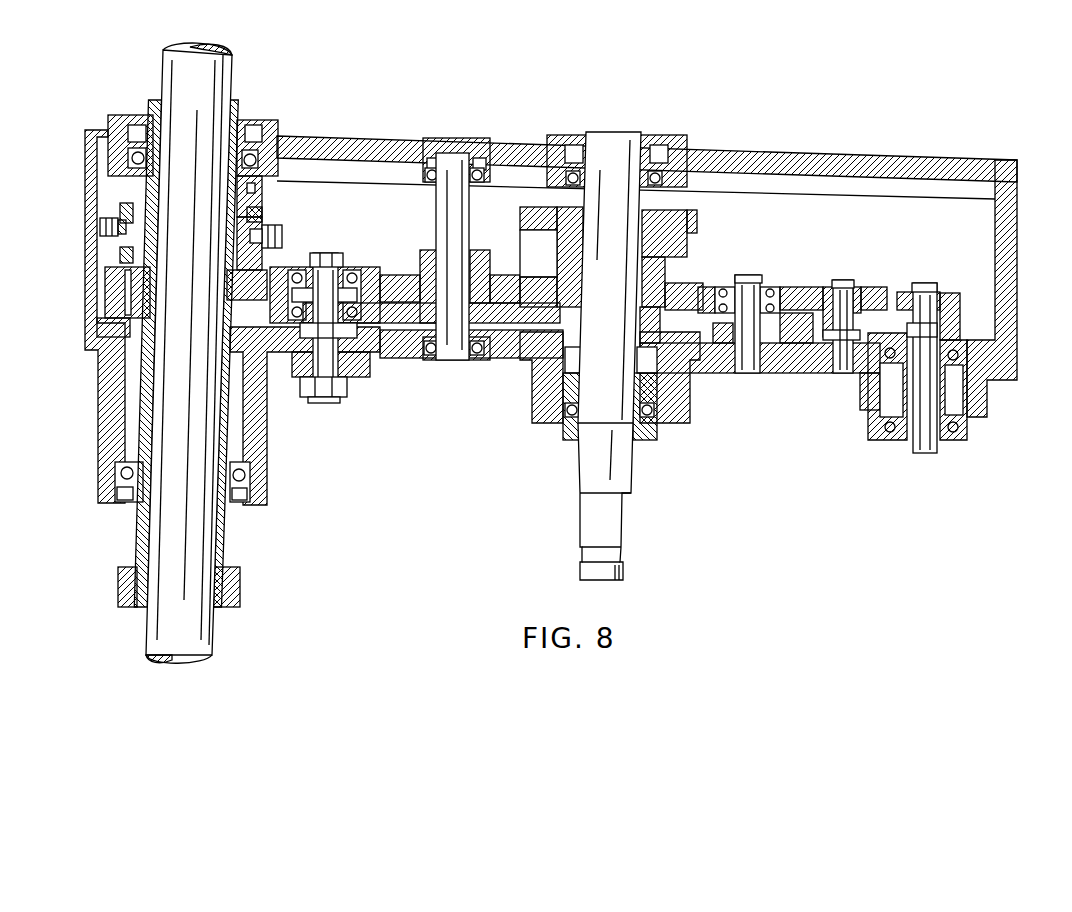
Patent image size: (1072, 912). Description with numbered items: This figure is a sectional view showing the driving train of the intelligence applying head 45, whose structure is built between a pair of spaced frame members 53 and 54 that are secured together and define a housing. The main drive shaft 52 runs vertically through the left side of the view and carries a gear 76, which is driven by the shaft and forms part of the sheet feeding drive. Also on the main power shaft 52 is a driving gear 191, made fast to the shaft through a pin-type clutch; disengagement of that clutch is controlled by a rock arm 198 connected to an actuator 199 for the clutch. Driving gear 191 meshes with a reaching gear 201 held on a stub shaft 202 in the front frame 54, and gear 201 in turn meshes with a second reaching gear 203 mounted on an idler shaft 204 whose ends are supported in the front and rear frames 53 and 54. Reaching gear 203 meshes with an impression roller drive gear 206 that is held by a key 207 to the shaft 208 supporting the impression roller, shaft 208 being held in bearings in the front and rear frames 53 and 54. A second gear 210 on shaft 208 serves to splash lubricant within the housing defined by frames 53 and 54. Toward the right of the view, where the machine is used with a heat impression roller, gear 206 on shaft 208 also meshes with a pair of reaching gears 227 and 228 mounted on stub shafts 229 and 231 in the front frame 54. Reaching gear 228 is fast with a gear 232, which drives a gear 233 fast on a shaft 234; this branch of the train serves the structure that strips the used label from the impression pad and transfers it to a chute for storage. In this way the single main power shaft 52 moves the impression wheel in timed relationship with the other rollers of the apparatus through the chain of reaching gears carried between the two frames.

The intelligence applying head 45 is at (792, 500).
The main drive shaft 52 is at (212, 632).
The frame member 53 is at (862, 160).
The frame member 54 is at (505, 325).
The gear 76 is at (255, 190).
The gear 191 is at (265, 272).
The rock arm 198 is at (107, 213).
The actuator 199 is at (272, 235).
The reaching gear 201 is at (365, 335).
The stub shaft 202 is at (322, 403).
The second reaching gear 203 is at (495, 290).
The idler shaft 204 is at (462, 228).
The impression roller drive gear 206 is at (675, 295).
The key 207 is at (590, 255).
The shaft 208 is at (572, 455).
The second gear 210 is at (688, 208).
The reaching gear 227 is at (790, 285).
The reaching gear 228 is at (875, 295).
The stub shaft 229 is at (738, 365).
The stub shaft 231 is at (843, 372).
The gear 232 is at (842, 287).
The gear 233 is at (945, 293).
The shaft 234 is at (906, 450).